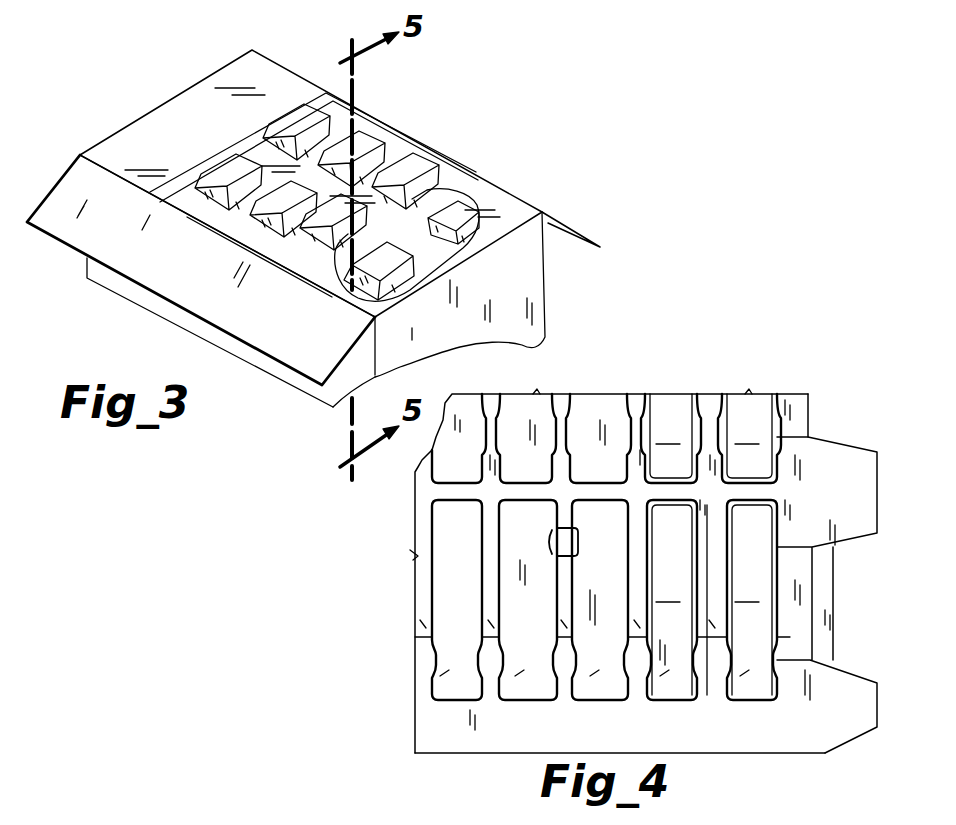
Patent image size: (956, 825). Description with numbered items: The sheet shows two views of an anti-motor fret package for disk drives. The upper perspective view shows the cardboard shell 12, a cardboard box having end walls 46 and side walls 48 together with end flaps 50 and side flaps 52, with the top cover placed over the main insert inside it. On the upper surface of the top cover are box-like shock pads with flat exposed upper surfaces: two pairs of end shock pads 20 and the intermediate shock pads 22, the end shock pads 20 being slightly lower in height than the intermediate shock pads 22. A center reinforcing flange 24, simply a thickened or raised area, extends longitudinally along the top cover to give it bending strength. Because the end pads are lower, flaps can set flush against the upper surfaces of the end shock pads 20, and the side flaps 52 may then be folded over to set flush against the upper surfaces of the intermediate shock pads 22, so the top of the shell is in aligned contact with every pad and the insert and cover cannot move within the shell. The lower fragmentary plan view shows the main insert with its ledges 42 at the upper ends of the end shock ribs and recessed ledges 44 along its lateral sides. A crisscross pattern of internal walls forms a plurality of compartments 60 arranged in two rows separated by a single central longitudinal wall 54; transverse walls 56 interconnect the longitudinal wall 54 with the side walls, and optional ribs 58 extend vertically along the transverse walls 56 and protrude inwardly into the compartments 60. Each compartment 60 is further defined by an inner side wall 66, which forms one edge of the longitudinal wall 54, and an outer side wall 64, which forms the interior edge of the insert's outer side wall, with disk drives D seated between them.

In FIG. 3, the cardboard shell 12 is at (577, 302).
In FIG. 3, the end shock pads 20 is at (457, 213).
In FIG. 3, the intermediate shock pads 22 is at (295, 125).
In FIG. 3, the center reinforcing flange 24 is at (262, 158).
In FIG. 4, the ledges 42 is at (842, 460).
In FIG. 4, the recessed ledges 44 is at (447, 727).
In FIG. 3, the end walls 46 is at (518, 271).
In FIG. 3, the side walls 48 is at (332, 390).
In FIG. 3, the end flaps 50 is at (130, 147).
In FIG. 3, the side flaps 52 is at (83, 232).
In FIG. 4, the longitudinal wall 54 is at (747, 493).
In FIG. 4, the transverse walls 56 is at (633, 403).
In FIG. 4, the ribs 58 is at (549, 549).
In FIG. 4, the compartments 60 is at (453, 533).
In FIG. 4, the outer side wall 64 is at (450, 693).
In FIG. 4, the inner side wall 66 is at (512, 480).